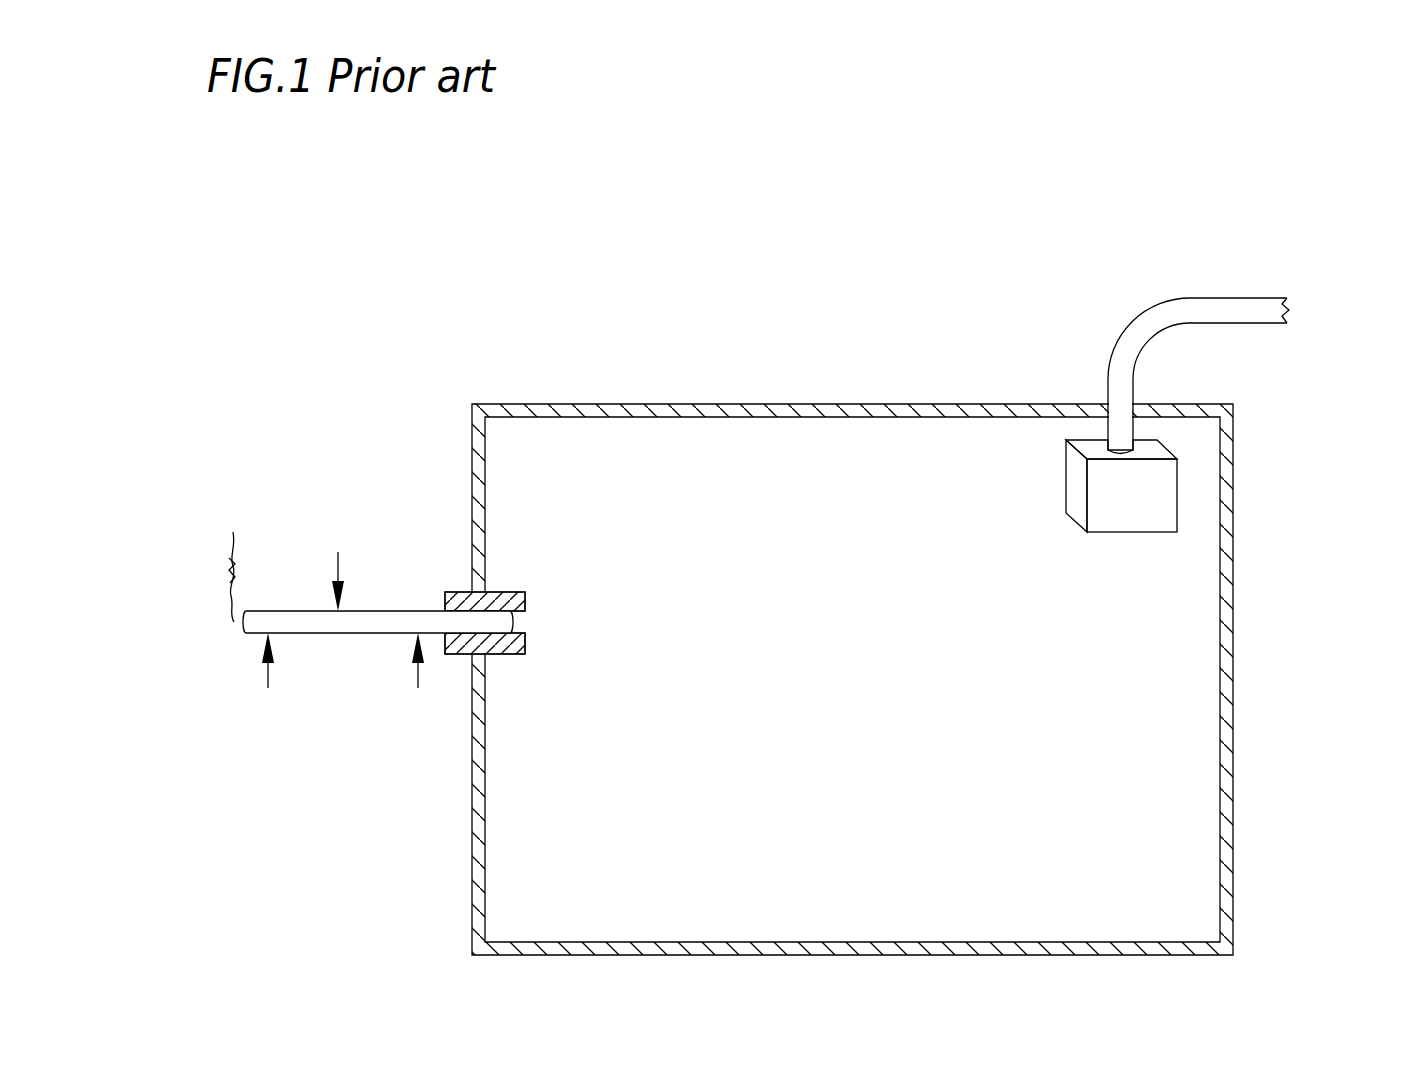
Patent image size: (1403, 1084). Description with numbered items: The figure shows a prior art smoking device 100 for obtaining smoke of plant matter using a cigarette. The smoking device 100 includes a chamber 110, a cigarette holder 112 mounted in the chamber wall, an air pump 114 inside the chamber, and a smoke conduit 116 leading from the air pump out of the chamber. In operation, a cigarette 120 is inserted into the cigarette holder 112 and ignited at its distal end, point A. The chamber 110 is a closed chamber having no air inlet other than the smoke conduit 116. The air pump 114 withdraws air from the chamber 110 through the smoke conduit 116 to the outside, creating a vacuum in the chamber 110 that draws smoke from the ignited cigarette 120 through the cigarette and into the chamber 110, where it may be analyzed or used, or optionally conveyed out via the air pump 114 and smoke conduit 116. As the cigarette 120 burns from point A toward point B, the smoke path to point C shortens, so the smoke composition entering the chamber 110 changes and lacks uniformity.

The smoking device 100 is at (1103, 115).
The chamber 110 is at (590, 404).
The cigarette holder 112 is at (458, 591).
The air pump 114 is at (1130, 532).
The smoke conduit 116 is at (1255, 295).
The cigarette 120 is at (374, 633).